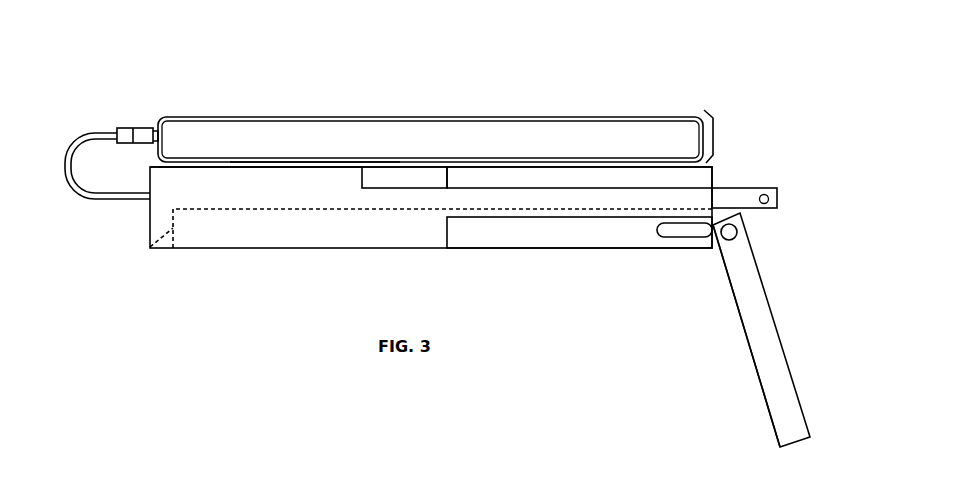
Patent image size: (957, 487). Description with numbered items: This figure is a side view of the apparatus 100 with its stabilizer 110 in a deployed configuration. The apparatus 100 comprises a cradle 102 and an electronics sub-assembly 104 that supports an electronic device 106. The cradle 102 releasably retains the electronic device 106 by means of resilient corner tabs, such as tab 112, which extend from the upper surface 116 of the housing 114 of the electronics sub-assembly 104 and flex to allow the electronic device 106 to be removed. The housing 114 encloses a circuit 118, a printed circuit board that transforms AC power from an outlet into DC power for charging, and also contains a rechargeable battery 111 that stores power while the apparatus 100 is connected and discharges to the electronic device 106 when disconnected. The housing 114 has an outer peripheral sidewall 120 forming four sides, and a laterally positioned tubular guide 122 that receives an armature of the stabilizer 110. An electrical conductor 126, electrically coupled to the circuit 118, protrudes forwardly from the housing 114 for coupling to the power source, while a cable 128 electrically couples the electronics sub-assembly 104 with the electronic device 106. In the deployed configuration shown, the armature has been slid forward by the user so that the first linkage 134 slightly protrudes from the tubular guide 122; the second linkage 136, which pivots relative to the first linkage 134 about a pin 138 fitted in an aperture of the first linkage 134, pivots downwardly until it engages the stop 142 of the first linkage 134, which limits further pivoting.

The apparatus 100 is at (576, 27).
The cradle 102 is at (111, 111).
The electronics sub-assembly 104 is at (121, 223).
The electronic device 106 is at (425, 128).
The stabilizer 110 is at (782, 332).
The rechargeable battery 111 is at (405, 175).
The tab 112 is at (717, 137).
The housing 114 is at (235, 183).
The upper surface 116 is at (298, 160).
The circuit 118 is at (597, 175).
The outer peripheral sidewall 120 is at (285, 202).
The tubular guide 122 is at (150, 248).
The electrical conductor 126 is at (345, 135).
The cable 128 is at (65, 190).
The first linkage 134 is at (563, 230).
The second linkage 136 is at (756, 347).
The pin 138 is at (741, 229).
The stop 142 is at (682, 230).